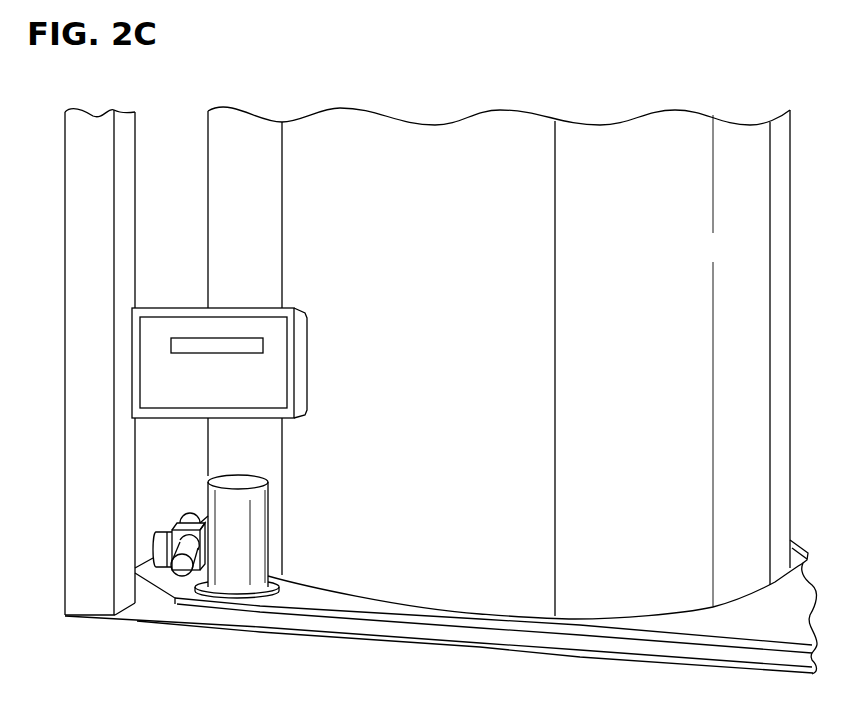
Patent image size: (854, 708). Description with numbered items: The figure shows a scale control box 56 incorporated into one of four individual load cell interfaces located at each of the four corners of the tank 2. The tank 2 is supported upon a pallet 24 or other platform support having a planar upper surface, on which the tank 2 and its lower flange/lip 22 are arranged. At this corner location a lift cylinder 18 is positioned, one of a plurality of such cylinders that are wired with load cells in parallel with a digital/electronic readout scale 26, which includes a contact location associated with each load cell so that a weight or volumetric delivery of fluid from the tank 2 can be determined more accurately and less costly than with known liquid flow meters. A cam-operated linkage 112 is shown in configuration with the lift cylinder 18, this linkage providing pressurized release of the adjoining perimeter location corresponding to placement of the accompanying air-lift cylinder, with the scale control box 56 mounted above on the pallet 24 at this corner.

The tank 2 is at (385, 140).
The lift cylinder 18 is at (272, 536).
The lower flange/lip 22 is at (302, 590).
The pallet 24 is at (132, 613).
The digital/electronic readout scale 26 is at (203, 592).
The scale control box 56 is at (206, 390).
The cam-operated linkage 112 is at (160, 524).